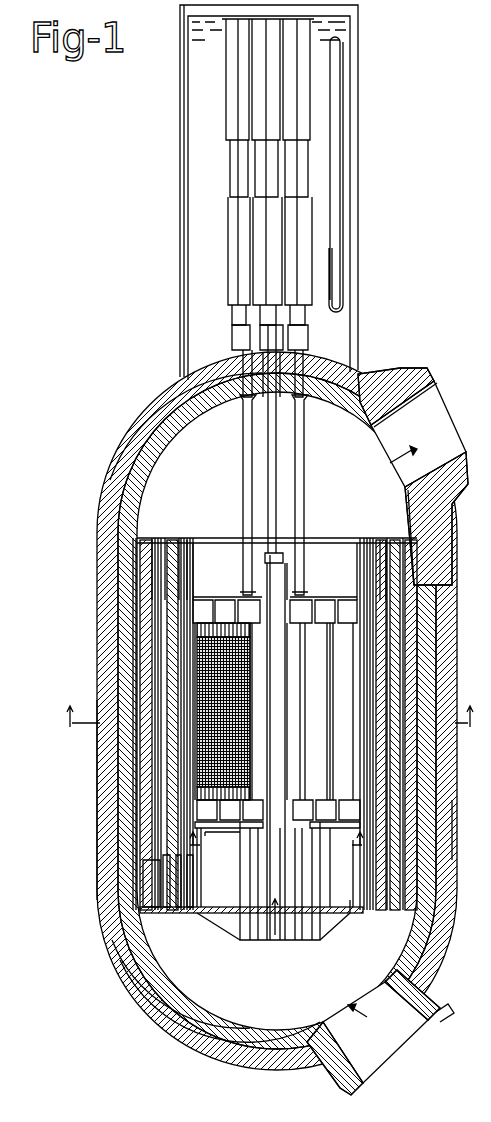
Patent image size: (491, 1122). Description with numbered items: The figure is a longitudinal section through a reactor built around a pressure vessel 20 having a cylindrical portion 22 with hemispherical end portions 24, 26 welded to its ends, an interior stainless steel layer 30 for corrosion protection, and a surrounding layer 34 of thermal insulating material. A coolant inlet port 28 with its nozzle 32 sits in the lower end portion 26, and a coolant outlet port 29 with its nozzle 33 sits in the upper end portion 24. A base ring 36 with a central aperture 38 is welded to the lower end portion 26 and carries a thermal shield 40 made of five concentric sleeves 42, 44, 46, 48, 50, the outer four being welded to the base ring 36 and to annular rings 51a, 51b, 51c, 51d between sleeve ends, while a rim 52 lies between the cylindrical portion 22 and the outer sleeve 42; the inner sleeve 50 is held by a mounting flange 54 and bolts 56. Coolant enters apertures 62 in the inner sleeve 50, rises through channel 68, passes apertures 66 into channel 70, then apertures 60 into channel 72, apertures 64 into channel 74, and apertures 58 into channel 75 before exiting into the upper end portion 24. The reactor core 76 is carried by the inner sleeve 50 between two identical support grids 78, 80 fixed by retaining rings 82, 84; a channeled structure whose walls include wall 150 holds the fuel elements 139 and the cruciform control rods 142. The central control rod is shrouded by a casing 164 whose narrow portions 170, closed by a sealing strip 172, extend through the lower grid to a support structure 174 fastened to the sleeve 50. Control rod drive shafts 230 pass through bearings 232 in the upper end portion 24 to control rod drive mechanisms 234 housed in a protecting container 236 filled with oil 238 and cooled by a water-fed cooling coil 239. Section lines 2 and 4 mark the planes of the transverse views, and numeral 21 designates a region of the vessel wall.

The section line 2- 2 is at (266, 718).
The section line 4- 4 is at (276, 842).
The pressure vessel 20 is at (160, 1005).
The vessel wall region 21 is at (471, 830).
The cylindrical portion 22 is at (128, 757).
The hemispherical end portion 24 is at (145, 443).
The hemispherical end portion 26 is at (235, 1045).
The coolant inlet port 28 is at (400, 1040).
The coolant outlet port 29 is at (442, 422).
The stainless steel layer 30 is at (208, 1020).
The nozzle 32 is at (432, 1012).
The nozzle 33 is at (428, 382).
The layer of thermal insulating material 34 is at (108, 824).
The base ring 36 is at (430, 910).
The central aperture 38 is at (353, 915).
The thermal shield 40 is at (158, 758).
The sleeve 42 is at (148, 668).
The sleeve 44 is at (158, 652).
The sleeve 46 is at (168, 636).
The sleeve 48 is at (178, 616).
The inner sleeve 50 is at (185, 598).
The annular ring 51a is at (168, 526).
The annular ring 51b is at (168, 538).
The annular ring 51c is at (180, 540).
The annular ring 51d is at (188, 541).
The rim 52 is at (130, 548).
The mounting flange 54 is at (178, 915).
The bolts 56 is at (200, 915).
The apertures 58 is at (150, 888).
The apertures 60 is at (170, 913).
The apertures 62 is at (196, 875).
The apertures 64 is at (392, 540).
The apertures 66 is at (358, 552).
The channel 68 is at (358, 590).
The channel 70 is at (420, 612).
The channel 72 is at (375, 635).
The channel 74 is at (393, 654).
The channel 75 is at (410, 684).
The reactor core 76 is at (292, 701).
The support grid 78 is at (336, 800).
The support grid 80 is at (218, 605).
The retaining ring 82 is at (222, 851).
The retaining ring 84 is at (208, 600).
The fuel elements 139 is at (233, 745).
The cruciform control rods 142 is at (285, 583).
The wall 150 is at (448, 518).
The casing 164 is at (268, 940).
The narrow portions 170 is at (283, 937).
The sealing strip 172 is at (282, 884).
The support structure 174 is at (333, 930).
The control rod drive shafts 230 is at (272, 432).
The bearings 232 is at (287, 345).
The control rod drive mechanisms 234 is at (240, 247).
The protecting container 236 is at (358, 170).
The oil 238 is at (190, 200).
The cooling coil 239 is at (345, 108).